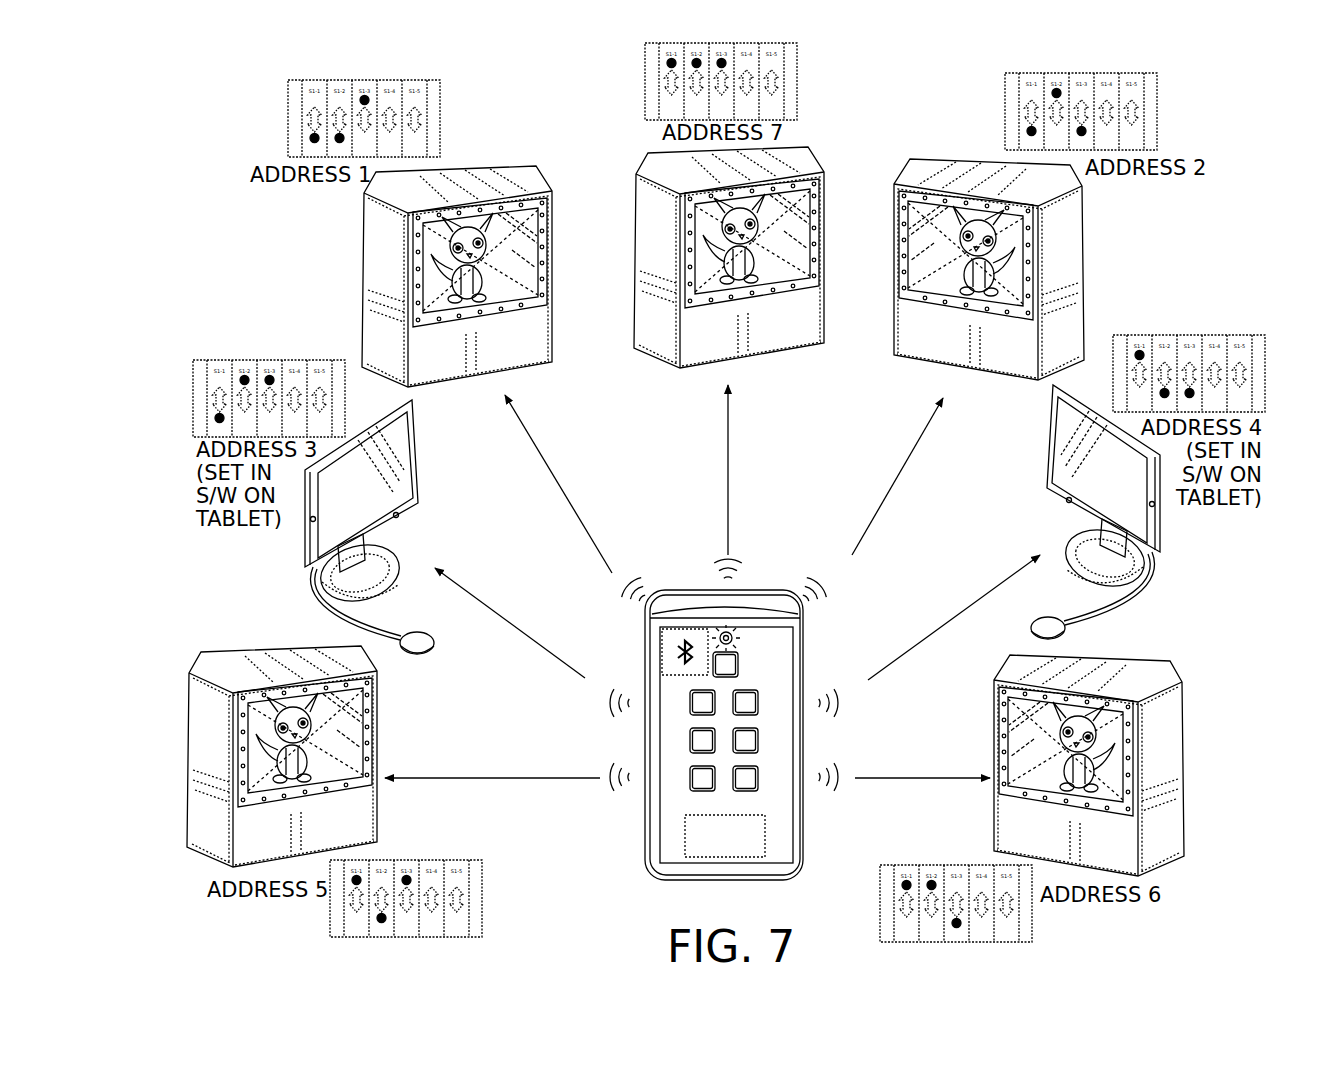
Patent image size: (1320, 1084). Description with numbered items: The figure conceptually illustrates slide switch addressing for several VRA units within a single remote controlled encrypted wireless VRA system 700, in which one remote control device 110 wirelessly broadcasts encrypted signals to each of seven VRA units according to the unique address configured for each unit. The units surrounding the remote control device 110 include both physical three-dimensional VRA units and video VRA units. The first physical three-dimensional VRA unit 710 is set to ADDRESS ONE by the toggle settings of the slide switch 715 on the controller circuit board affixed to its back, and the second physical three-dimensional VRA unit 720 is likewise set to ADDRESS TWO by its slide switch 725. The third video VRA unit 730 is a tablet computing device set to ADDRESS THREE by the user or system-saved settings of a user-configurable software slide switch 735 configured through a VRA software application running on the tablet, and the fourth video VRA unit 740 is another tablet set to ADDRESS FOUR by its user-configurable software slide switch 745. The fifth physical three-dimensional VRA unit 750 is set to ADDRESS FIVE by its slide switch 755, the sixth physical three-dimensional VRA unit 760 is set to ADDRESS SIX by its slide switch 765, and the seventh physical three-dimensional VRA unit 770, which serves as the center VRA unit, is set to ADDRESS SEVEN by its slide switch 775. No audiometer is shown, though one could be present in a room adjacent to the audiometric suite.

The single remote controlled encrypted wireless VRA system 700 is at (198, 118).
The remote control device 110 is at (803, 648).
The first physical 3D VRA unit 710 is at (518, 174).
The slide switch 715 is at (441, 94).
The second physical 3D VRA unit 720 is at (930, 165).
The slide switch 725 is at (1005, 92).
The third video VRA unit 730 is at (302, 541).
The user-configurable software slide switch 735 is at (252, 358).
The fourth video VRA unit 740 is at (1056, 497).
The user-configurable software slide switch 745 is at (1210, 336).
The fifth physical 3D VRA unit 750 is at (393, 697).
The slide switch 755 is at (430, 861).
The sixth physical 3D VRA unit 760 is at (995, 704).
The slide switch 765 is at (933, 864).
The seventh physical 3D VRA unit 770 is at (828, 176).
The slide switch 775 is at (797, 80).